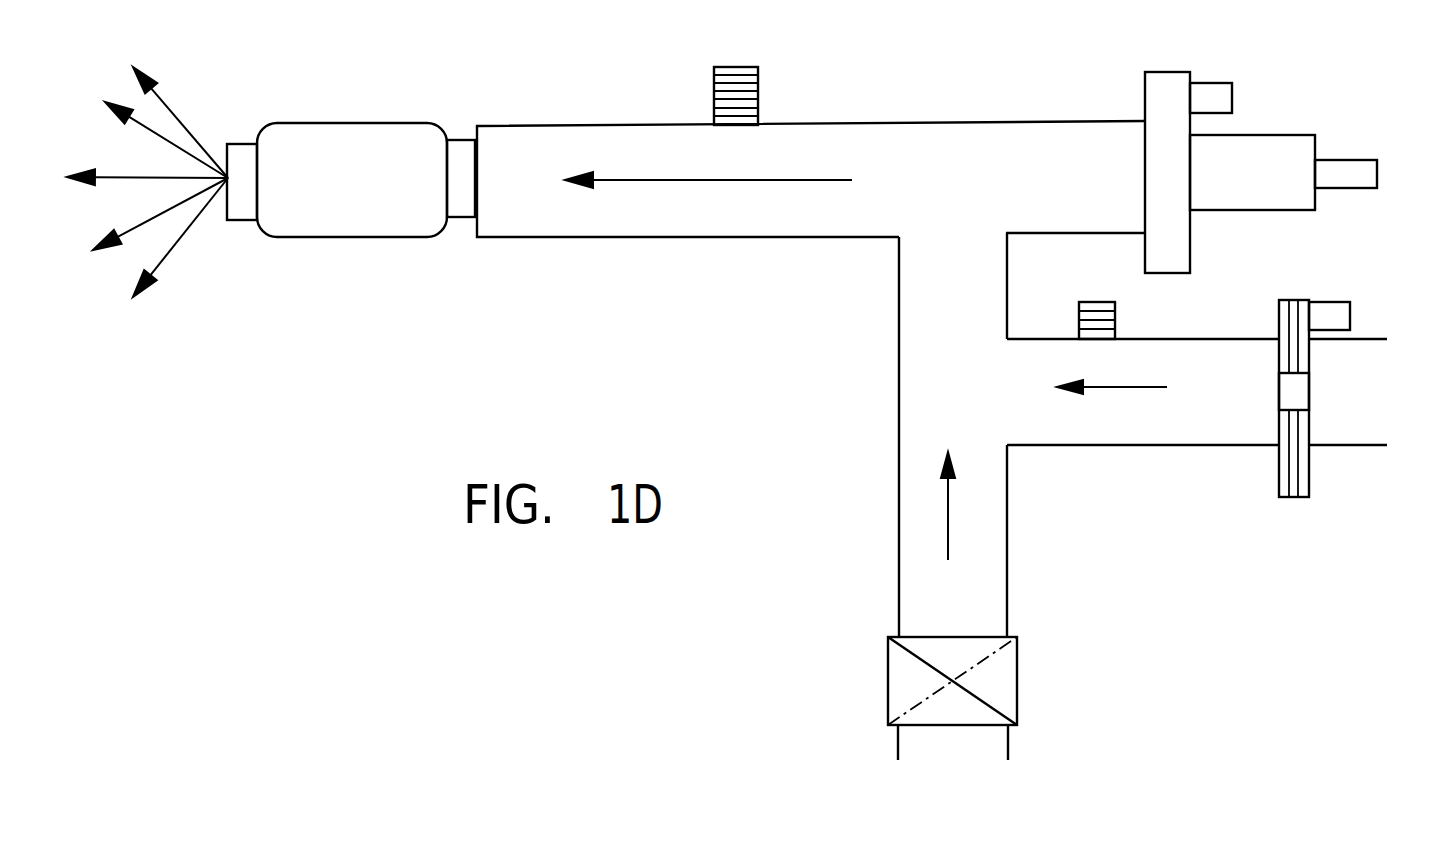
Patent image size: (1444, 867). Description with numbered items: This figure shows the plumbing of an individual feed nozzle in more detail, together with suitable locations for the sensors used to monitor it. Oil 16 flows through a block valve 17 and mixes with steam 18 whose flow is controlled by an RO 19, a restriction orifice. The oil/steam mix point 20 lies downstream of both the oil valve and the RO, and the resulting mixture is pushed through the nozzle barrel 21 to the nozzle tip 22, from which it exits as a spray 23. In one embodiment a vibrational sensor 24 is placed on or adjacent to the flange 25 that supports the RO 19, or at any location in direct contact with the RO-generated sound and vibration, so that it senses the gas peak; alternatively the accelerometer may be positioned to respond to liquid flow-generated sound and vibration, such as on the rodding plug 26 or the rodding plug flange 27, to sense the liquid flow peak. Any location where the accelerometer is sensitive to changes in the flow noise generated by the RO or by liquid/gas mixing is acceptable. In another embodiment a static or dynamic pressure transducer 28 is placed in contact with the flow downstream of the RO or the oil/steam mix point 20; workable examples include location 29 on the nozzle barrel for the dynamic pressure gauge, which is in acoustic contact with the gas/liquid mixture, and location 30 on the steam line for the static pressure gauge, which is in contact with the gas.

The oil 16 is at (951, 526).
The block valve 17 is at (888, 680).
The steam 18 is at (1197, 392).
The RO 19 is at (1305, 388).
The oil/steam mix point 20 is at (972, 410).
The nozzle barrel 21 is at (675, 228).
The nozzle tip 22 is at (310, 235).
The spray 23 is at (185, 98).
The vibrational sensor 24 is at (1327, 300).
The flange 25 is at (1290, 300).
The rodding plug 26 is at (1350, 160).
The rodding plug flange 27 is at (1163, 72).
The pressure transducer 28 is at (753, 68).
The location for the dynamic pressure gauge 29 is at (769, 96).
The location for the static pressure gauge 30 is at (1131, 320).